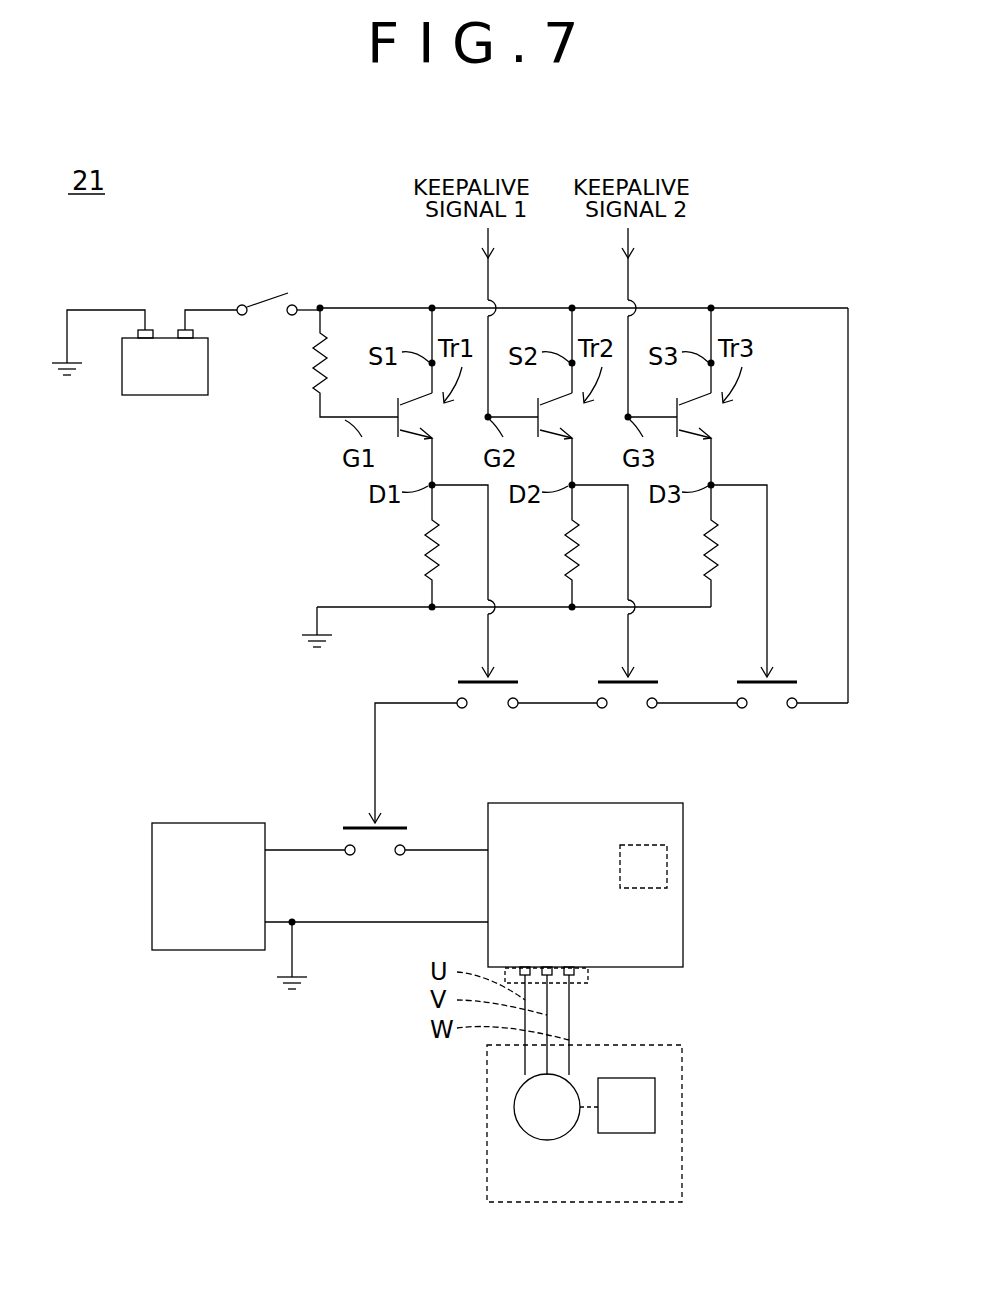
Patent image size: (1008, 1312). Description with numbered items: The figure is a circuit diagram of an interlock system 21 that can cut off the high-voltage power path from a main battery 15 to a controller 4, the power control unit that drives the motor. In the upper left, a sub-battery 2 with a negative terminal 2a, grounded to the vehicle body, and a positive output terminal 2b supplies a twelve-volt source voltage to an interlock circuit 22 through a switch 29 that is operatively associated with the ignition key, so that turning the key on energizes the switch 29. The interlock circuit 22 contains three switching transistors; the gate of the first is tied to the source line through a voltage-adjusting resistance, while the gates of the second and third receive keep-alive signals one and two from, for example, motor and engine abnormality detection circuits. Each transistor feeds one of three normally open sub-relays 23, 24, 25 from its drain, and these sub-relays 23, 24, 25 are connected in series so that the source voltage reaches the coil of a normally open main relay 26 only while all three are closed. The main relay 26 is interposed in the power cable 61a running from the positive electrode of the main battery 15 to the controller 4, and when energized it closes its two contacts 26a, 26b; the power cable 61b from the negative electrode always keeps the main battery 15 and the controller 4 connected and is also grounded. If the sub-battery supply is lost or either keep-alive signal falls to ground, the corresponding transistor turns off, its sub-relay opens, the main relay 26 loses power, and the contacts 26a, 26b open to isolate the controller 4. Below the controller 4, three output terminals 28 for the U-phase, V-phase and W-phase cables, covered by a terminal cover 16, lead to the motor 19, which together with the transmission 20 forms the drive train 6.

The interlock system 21 is at (668, 865).
The sub-battery 2 is at (144, 357).
The negative terminal 2a is at (150, 312).
The positive output terminal 2b is at (182, 312).
The switch 29 is at (278, 283).
The interlock circuit 22 is at (838, 260).
The sub-relay 23 is at (481, 716).
The sub-relay 24 is at (622, 717).
The sub-relay 25 is at (762, 717).
The main relay 26 is at (367, 819).
The contact 26a is at (349, 856).
The contact 26b is at (402, 856).
The power cable 61a is at (297, 848).
The power cable 61b is at (378, 925).
The main battery 15 is at (208, 940).
The controller 4 is at (683, 928).
The terminal cover 16 is at (588, 975).
The output terminals 28 is at (527, 983).
The motor 19 is at (512, 1105).
The transmission 20 is at (655, 1105).
The drive train 6 is at (487, 1176).